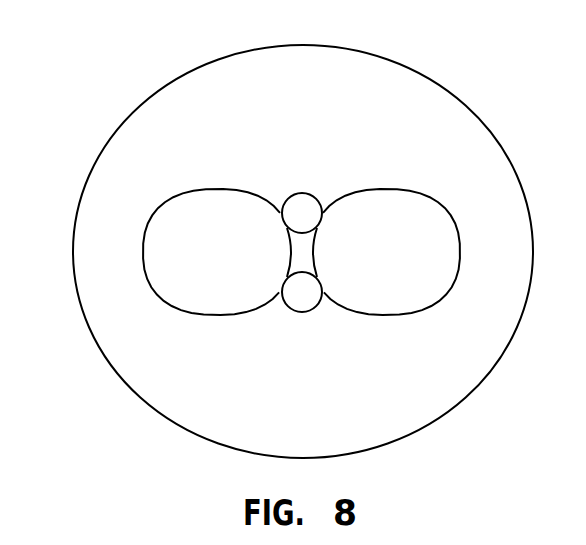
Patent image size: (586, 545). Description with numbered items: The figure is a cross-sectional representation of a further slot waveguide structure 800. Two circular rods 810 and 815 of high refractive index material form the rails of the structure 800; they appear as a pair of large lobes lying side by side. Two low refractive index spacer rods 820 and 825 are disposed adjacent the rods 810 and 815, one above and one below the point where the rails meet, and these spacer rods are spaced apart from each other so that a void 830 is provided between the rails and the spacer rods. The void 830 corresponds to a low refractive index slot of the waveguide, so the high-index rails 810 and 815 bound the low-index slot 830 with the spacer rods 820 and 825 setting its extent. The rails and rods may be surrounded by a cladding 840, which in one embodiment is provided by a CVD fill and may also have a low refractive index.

The slot waveguide structure 800 is at (93, 83).
The circular rod 810 is at (177, 218).
The circular rod 815 is at (427, 280).
The low refractive index spacer rod 820 is at (307, 300).
The low refractive index spacer rod 825 is at (303, 207).
The void 830 is at (302, 248).
The cladding 840 is at (443, 120).